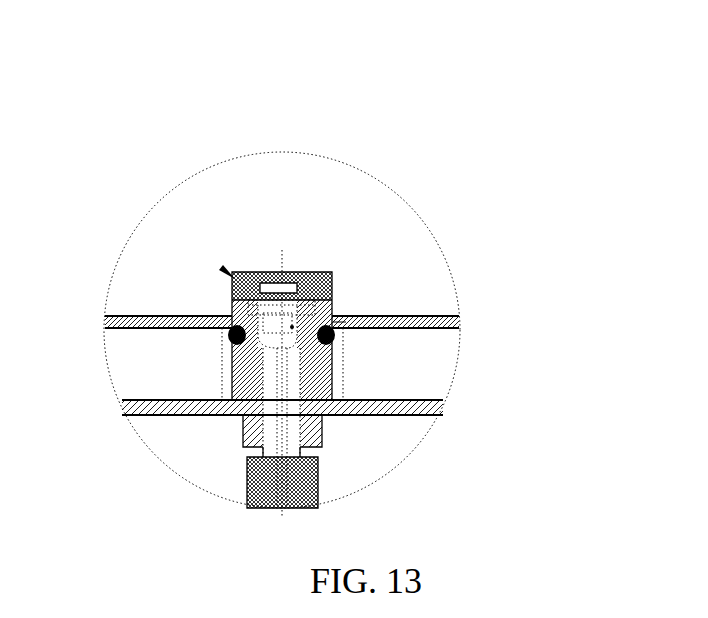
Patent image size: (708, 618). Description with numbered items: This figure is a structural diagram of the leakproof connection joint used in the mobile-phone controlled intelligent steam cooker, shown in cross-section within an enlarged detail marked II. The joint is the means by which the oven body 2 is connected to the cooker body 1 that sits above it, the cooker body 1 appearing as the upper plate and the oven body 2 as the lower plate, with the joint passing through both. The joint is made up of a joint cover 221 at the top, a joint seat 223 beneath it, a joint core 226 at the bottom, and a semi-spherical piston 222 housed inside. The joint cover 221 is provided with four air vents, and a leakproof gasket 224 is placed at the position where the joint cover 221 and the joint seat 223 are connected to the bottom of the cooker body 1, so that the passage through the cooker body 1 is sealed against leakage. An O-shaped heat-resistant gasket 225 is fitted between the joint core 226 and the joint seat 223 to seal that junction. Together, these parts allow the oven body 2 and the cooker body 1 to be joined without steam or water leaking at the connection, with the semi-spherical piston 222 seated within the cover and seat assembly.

The cooker body 1 is at (385, 244).
The oven body 2 is at (392, 389).
The joint cover 221 is at (187, 209).
The semi-spherical piston 222 is at (311, 173).
The joint seat 223 is at (370, 183).
The leakproof gasket 224 is at (446, 181).
The O-shaped heat-resistant gasket 225 is at (499, 202).
The joint core 226 is at (453, 402).
The section indicator II is at (138, 193).